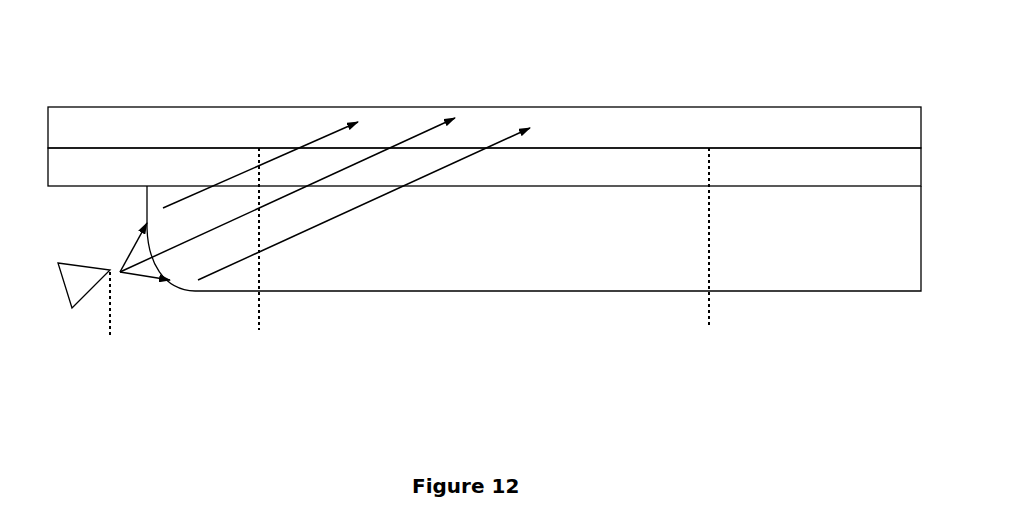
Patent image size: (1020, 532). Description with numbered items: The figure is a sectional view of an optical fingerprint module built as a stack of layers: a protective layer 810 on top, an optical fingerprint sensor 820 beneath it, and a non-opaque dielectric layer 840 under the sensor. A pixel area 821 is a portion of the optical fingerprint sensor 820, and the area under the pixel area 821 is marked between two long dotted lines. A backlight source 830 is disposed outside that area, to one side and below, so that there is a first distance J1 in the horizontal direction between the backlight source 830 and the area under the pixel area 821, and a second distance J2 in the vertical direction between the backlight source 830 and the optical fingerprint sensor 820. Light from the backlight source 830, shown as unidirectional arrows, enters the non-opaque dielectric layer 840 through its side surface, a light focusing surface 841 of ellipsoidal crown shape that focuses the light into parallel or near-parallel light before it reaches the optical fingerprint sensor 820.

The protective layer 810 is at (844, 137).
The optical fingerprint sensor 820 is at (772, 175).
The pixel area 821 is at (709, 312).
The backlight source 830 is at (76, 290).
The non-opaque dielectric layer 840 is at (777, 275).
The light focusing surface 841 is at (146, 222).
The first distance J1 is at (259, 312).
The second distance J2 is at (110, 188).